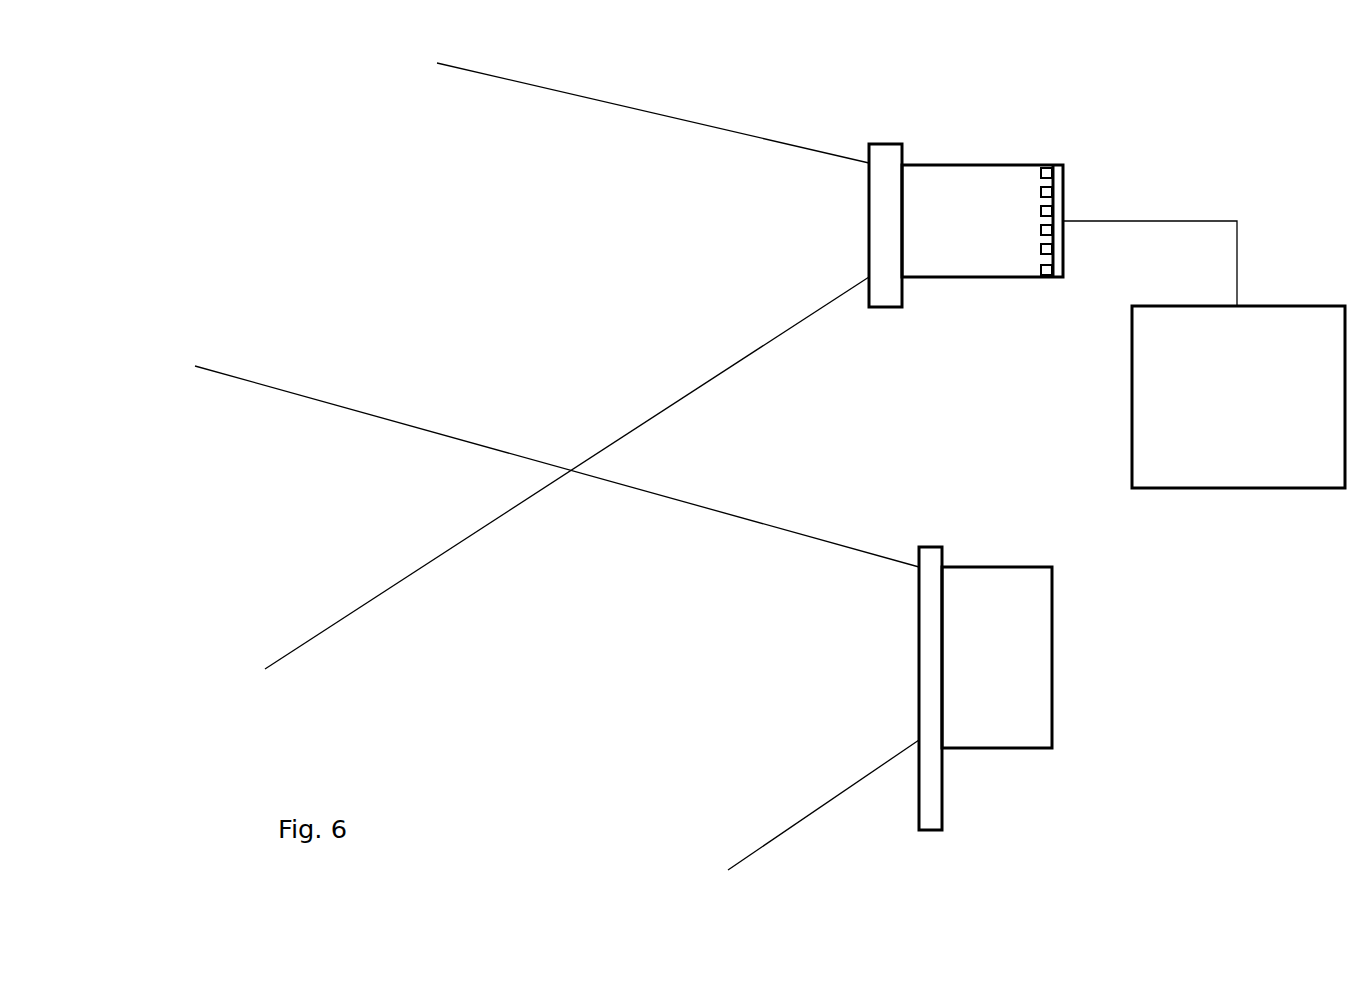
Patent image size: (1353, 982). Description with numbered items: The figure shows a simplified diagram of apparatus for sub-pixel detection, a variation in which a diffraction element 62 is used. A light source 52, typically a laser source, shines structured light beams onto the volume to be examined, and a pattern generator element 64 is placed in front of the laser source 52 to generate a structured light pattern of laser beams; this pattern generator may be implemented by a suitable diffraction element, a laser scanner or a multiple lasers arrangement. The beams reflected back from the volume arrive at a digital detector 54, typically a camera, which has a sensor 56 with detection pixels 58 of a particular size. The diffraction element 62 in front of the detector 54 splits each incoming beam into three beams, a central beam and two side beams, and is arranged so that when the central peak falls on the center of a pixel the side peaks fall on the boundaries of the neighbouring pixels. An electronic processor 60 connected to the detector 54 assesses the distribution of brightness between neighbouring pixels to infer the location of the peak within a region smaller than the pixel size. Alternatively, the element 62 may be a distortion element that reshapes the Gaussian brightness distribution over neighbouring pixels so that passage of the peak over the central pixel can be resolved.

The light source 52 is at (990, 738).
The detector 54 is at (910, 177).
The sensor 56 is at (1065, 165).
The detection pixels 58 is at (1040, 270).
The electronic processor 60 is at (1282, 327).
The diffraction element 62 is at (868, 150).
The pattern generator element 64 is at (930, 545).